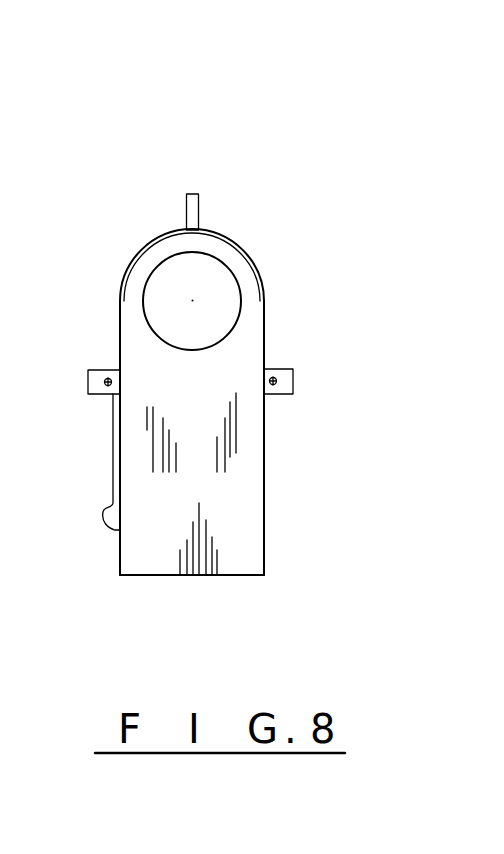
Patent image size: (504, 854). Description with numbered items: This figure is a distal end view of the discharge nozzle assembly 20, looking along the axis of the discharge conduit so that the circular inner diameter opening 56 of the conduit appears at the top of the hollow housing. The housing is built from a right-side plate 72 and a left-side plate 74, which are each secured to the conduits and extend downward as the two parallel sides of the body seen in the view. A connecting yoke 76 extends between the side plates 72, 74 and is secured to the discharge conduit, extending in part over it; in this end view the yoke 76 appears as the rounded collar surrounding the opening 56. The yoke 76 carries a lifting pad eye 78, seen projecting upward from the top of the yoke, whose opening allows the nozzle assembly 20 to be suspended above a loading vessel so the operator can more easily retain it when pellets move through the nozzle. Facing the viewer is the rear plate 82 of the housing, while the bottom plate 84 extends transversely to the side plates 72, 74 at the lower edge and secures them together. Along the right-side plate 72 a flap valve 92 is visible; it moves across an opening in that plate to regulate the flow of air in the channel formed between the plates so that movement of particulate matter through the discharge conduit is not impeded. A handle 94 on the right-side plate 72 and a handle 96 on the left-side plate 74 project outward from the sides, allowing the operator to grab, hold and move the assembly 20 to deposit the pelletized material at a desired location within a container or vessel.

The discharge nozzle assembly 20 is at (378, 131).
The inner diameter opening 56 is at (205, 298).
The right-side plate 72 is at (120, 558).
The left-side plate 74 is at (265, 500).
The connecting yoke 76 is at (145, 245).
The lifting pad eye 78 is at (200, 213).
The rear plate 82 is at (247, 450).
The bottom plate 84 is at (243, 577).
The flap valve 92 is at (103, 510).
The handle 94 is at (90, 368).
The handle 96 is at (292, 368).